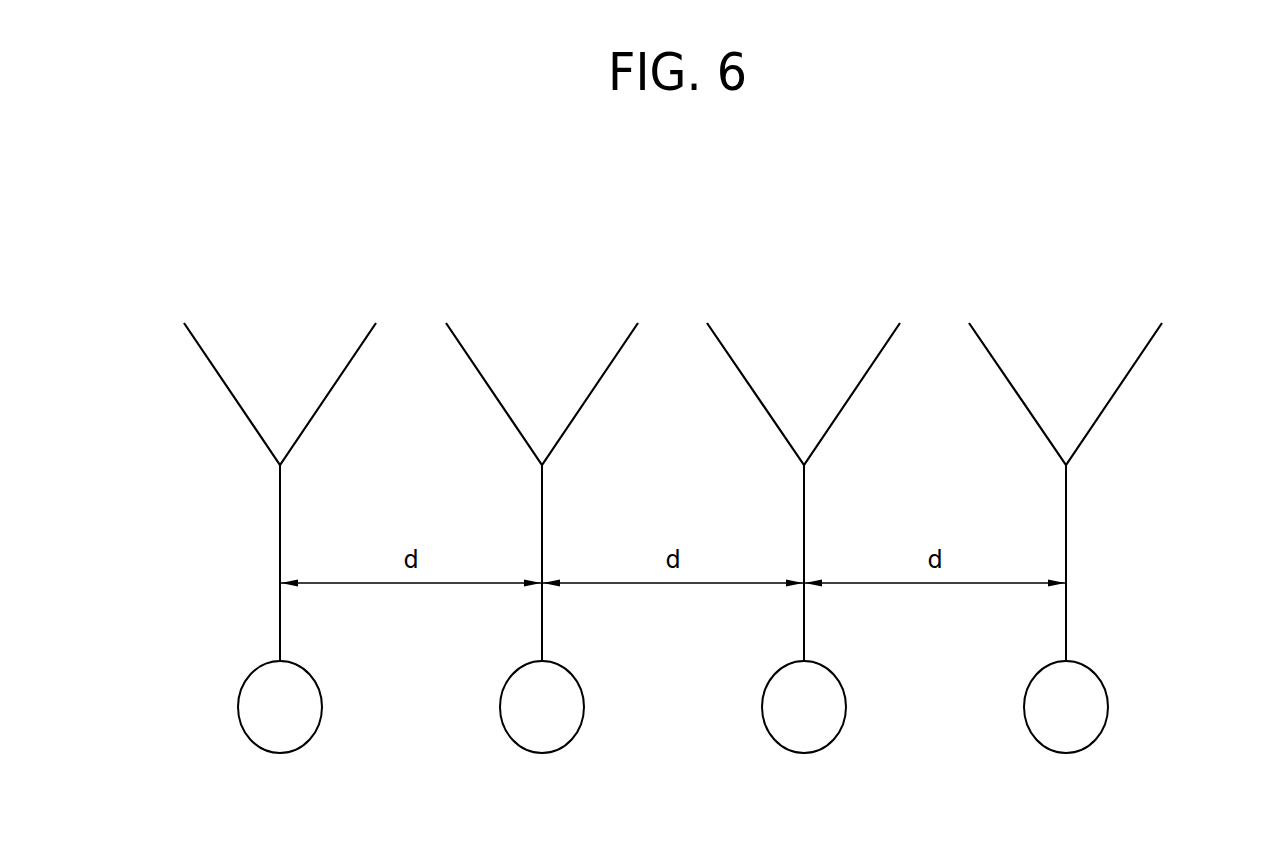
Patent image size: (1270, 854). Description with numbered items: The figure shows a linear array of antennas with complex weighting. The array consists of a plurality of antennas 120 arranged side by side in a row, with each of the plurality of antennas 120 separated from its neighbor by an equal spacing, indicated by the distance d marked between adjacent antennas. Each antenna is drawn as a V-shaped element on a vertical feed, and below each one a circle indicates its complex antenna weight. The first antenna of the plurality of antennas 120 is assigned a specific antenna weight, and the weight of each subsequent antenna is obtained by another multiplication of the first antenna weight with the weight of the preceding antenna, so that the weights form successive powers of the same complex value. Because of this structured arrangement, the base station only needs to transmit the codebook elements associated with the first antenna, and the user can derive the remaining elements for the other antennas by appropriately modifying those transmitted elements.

The plurality of antennas 120 is at (1006, 215).